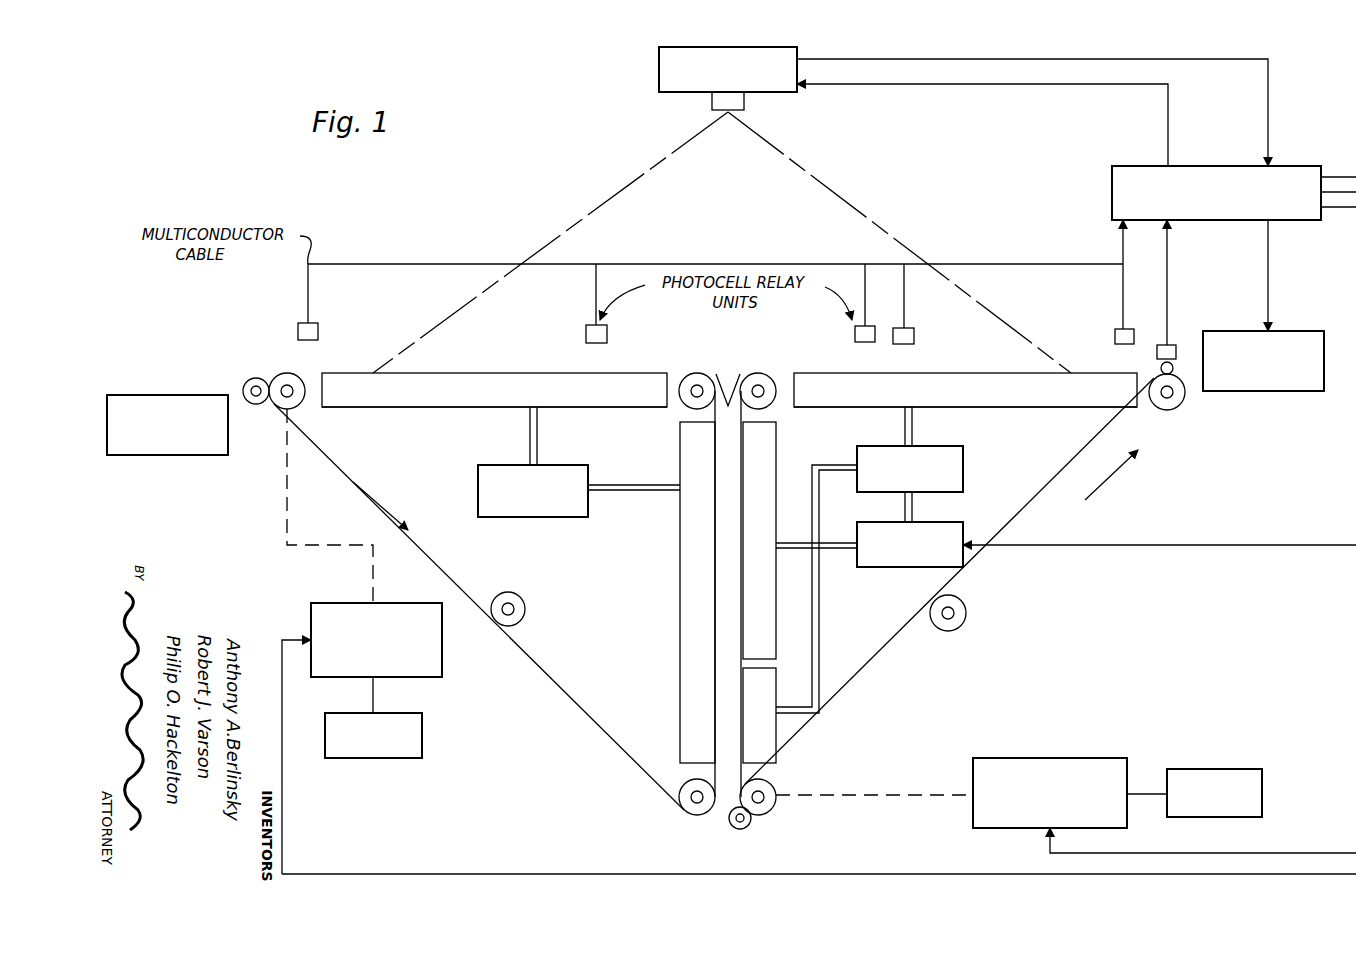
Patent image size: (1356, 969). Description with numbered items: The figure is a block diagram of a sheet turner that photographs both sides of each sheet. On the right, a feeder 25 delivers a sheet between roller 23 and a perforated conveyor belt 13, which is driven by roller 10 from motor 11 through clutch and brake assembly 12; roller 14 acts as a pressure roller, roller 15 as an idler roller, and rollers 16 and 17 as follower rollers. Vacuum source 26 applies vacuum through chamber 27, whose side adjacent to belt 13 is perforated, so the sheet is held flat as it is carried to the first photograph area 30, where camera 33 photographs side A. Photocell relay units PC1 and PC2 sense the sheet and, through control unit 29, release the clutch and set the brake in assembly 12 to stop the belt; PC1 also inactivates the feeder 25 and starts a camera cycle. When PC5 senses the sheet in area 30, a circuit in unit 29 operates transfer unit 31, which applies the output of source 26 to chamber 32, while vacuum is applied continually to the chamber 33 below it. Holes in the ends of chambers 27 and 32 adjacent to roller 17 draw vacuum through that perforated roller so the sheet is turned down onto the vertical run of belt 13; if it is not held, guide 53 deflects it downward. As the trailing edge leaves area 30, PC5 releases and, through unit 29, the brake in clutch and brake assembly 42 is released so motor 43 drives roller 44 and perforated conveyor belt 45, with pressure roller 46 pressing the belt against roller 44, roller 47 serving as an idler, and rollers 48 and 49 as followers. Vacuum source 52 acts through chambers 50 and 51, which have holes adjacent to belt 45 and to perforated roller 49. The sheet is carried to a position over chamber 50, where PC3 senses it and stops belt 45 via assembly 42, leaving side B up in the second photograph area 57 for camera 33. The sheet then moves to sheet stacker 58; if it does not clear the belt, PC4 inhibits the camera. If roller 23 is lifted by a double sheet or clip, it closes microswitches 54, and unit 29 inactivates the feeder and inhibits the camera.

The roller 10 is at (776, 802).
The motor 11 is at (1238, 752).
The clutch and brake assembly 12 is at (1092, 740).
The perforated conveyor belt 13 is at (893, 650).
The pressure roller 14 is at (742, 829).
The idler roller 15 is at (966, 612).
The follower roller 16 is at (1185, 398).
The follower roller 17 is at (758, 373).
The roller 23 is at (1160, 368).
The feeder 25 is at (1300, 331).
The vacuum source 26 is at (935, 446).
The chamber 27 is at (1014, 407).
The control unit 29 is at (1150, 166).
The first photograph area 30 is at (905, 372).
The transfer unit 31 is at (950, 522).
The chamber 32 is at (776, 446).
The camera 33 is at (659, 68).
The clutch and brake assembly 42 is at (424, 586).
The motor 43 is at (380, 758).
The roller 44 is at (287, 373).
The perforated conveyor belt 45 is at (597, 700).
The pressure roller 46 is at (252, 404).
The idler roller 47 is at (498, 618).
The follower roller 48 is at (682, 805).
The follower roller 49 is at (697, 373).
The chamber 50 is at (436, 407).
The chamber 51 is at (680, 652).
The vacuum source 52 is at (532, 517).
The guide 53 is at (744, 362).
The microswitches 54 is at (1157, 348).
The second photograph area 57 is at (505, 373).
The sheet stacker 58 is at (181, 455).
The photocell relay unit PC1 is at (1115, 337).
The photocell relay unit PC2 is at (914, 335).
The photocell relay unit PC3 is at (586, 334).
The photocell relay unit PC4 is at (298, 332).
The photocell relay unit PC5 is at (865, 342).